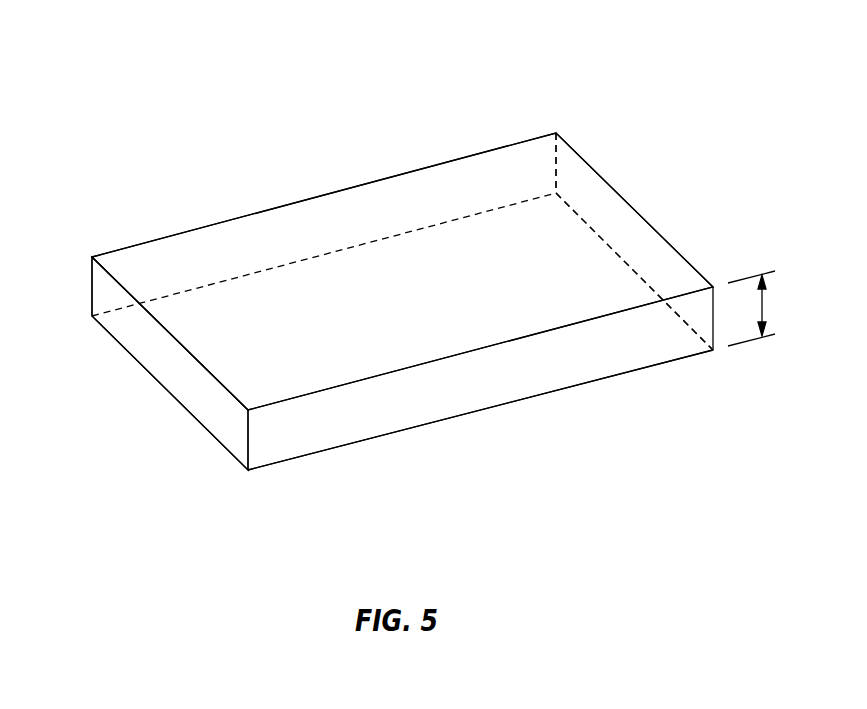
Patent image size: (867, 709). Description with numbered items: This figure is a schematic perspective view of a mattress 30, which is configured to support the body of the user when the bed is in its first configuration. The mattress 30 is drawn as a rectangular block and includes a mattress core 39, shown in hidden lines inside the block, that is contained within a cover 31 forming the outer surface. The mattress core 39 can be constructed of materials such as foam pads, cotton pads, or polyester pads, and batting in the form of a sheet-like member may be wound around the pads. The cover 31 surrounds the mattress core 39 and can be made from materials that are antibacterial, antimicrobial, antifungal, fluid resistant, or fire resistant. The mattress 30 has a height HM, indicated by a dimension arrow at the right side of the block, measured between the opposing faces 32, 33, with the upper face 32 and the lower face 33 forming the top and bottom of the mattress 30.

The mattress 30 is at (295, 130).
The cover 31 is at (140, 333).
The face 32 is at (283, 237).
The face 33 is at (377, 437).
The mattress core 39 is at (540, 255).
The height HM is at (765, 308).